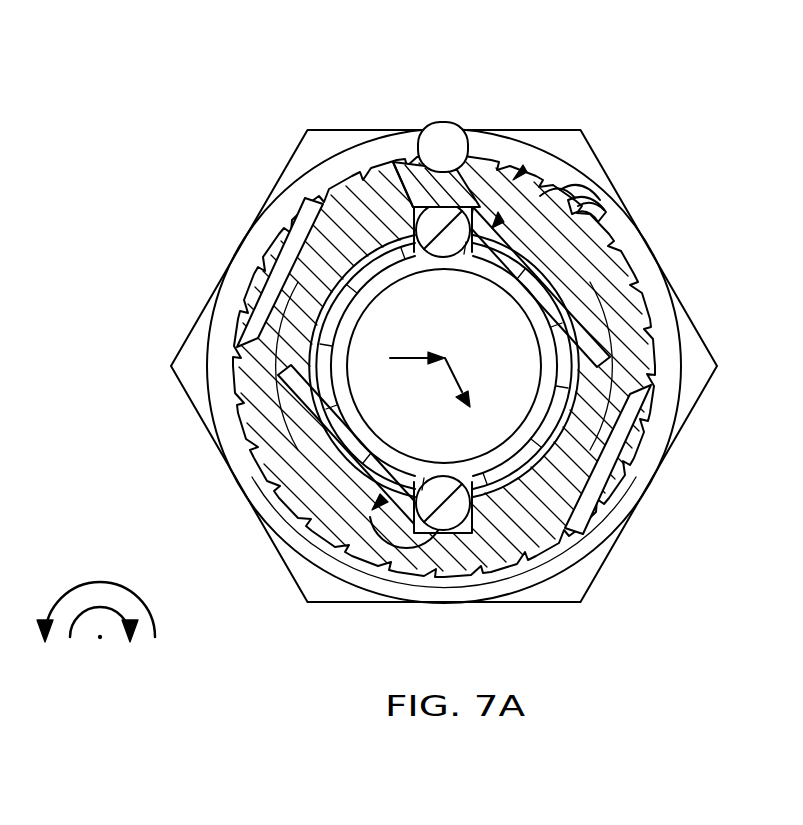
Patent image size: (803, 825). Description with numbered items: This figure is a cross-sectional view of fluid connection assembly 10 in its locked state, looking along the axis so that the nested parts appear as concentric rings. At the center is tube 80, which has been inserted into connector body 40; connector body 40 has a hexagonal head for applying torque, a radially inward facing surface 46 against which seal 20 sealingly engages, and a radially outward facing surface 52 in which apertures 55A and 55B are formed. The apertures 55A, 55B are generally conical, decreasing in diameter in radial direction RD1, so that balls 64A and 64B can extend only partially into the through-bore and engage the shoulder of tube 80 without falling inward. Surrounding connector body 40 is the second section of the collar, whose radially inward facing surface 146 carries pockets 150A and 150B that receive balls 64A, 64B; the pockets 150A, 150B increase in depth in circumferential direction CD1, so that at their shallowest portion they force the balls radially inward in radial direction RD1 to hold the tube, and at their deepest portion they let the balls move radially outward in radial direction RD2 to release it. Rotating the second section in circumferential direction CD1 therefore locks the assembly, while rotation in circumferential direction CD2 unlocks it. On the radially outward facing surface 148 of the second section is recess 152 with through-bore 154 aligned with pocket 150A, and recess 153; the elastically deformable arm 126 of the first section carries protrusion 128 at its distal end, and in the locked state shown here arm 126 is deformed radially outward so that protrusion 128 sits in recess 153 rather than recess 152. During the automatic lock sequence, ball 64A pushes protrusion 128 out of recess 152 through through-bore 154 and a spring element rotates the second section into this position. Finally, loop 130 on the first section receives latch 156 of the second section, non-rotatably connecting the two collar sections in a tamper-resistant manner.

The fluid connection assembly 10 is at (214, 95).
The seal 20 is at (571, 389).
The connector body 40 is at (562, 148).
The radially inward facing surface 46 is at (576, 373).
The radially outward facing surface 52 is at (563, 476).
The aperture 55A is at (425, 228).
The aperture 55B is at (437, 512).
The ball 64A is at (494, 226).
The ball 64B is at (447, 530).
The tube 80 is at (335, 373).
The arm 126 is at (418, 162).
The protrusion 128 is at (447, 124).
The loop 130 is at (610, 212).
The radially inward facing surface 146 is at (592, 484).
The radially outward facing surface 148 is at (334, 183).
The pocket 150A is at (513, 182).
The pocket 150B is at (375, 503).
The recess 152 is at (516, 177).
The recess 153 is at (416, 158).
The through-bore 154 is at (550, 190).
The latch 156 is at (592, 205).
The radial direction RD1 is at (410, 356).
The radial direction RD2 is at (452, 370).
The circumferential direction CD1 is at (78, 620).
The circumferential direction CD2 is at (82, 583).